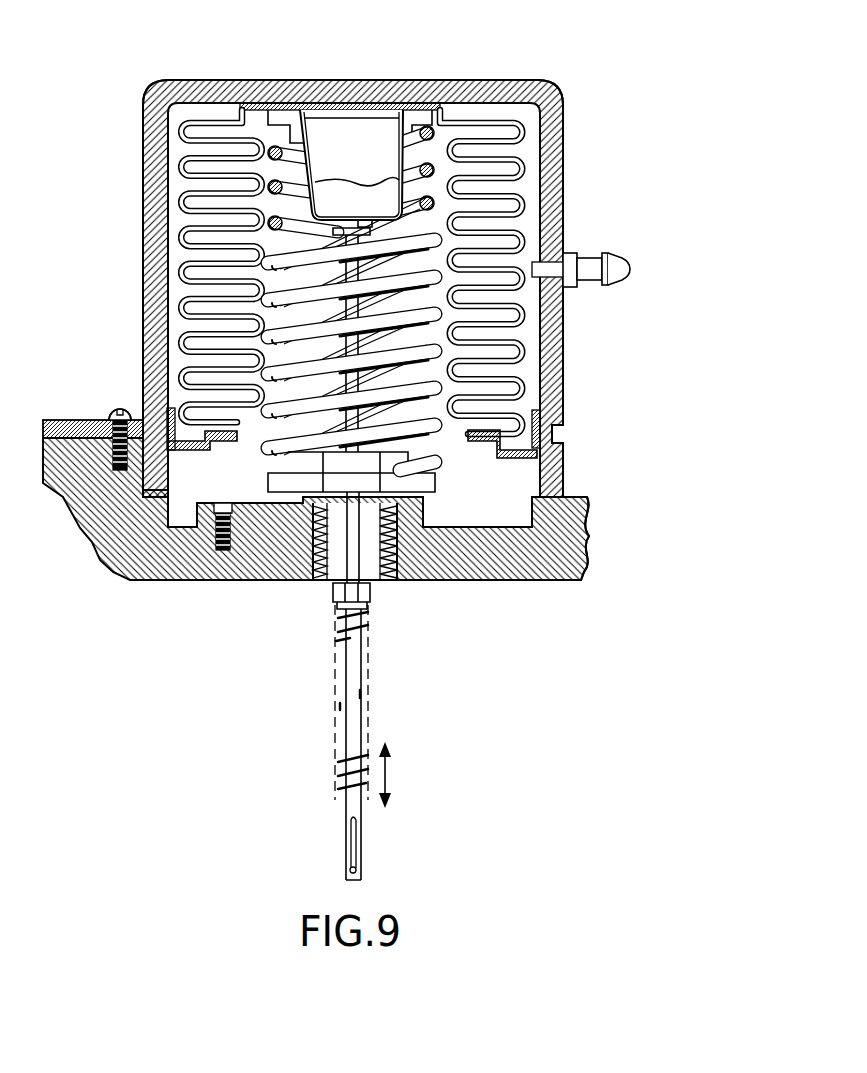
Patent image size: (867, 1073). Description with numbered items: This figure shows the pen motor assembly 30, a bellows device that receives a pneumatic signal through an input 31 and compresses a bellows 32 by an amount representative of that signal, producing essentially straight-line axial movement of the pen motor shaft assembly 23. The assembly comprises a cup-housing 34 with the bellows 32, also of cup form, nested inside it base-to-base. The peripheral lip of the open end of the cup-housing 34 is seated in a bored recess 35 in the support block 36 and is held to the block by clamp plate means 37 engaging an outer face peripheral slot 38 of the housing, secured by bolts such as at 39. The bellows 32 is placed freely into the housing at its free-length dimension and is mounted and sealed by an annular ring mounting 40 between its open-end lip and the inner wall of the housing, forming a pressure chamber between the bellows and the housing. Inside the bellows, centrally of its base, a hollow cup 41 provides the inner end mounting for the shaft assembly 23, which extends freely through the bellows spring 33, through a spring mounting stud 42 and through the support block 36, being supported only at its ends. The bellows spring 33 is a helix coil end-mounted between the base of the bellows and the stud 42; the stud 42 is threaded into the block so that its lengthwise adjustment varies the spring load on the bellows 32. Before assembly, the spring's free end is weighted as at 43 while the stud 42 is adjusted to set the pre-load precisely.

The pen motor shaft assembly 23 is at (294, 752).
The pen motor assembly 30 is at (114, 280).
The input 31 is at (623, 262).
The bellows 32 is at (522, 197).
The bellows spring 33 is at (425, 390).
The cup-housing 34 is at (563, 223).
The bored recess 35 is at (52, 573).
The support block 36 is at (537, 583).
The clamp plate means 37 is at (143, 418).
The outer face peripheral slot 38 is at (146, 392).
The bolts 39 is at (110, 410).
The annular ring mounting 40 is at (518, 455).
The hollow cup 41 is at (338, 188).
The spring mounting stud 42 is at (463, 580).
The weight 43 is at (265, 522).